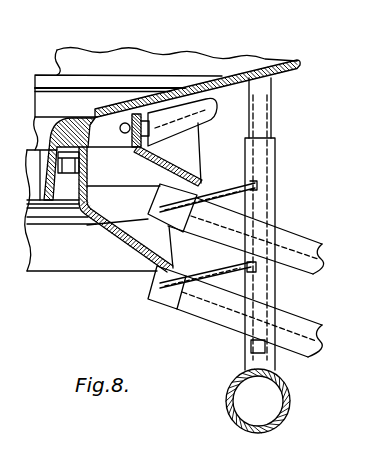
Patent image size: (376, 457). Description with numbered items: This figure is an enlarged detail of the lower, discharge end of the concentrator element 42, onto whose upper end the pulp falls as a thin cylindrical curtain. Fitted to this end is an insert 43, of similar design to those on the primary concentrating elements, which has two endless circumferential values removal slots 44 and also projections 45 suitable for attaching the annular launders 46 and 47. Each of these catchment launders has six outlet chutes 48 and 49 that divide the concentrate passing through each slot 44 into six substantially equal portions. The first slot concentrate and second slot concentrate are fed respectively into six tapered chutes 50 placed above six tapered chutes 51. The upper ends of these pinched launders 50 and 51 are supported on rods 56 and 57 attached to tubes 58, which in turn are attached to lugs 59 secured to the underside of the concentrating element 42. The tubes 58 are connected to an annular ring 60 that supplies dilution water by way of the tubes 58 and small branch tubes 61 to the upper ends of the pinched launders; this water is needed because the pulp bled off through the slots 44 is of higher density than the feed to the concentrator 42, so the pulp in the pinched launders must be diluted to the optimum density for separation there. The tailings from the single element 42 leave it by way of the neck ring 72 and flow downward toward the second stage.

The concentrator element 42 is at (261, 74).
The insert 43 is at (115, 82).
The circumferential values removal slot 44 is at (66, 112).
The projection 45 is at (89, 148).
The annular launder 46 is at (198, 132).
The annular launder 47 is at (88, 207).
The outlet chute 48 is at (199, 162).
The outlet chute 49 is at (136, 247).
The tapered chute 50 is at (292, 238).
The tapered chute 51 is at (296, 330).
The rod 56 is at (259, 272).
The rod 57 is at (274, 361).
The tube 58 is at (276, 190).
The lug 59 is at (273, 83).
The annular ring 60 is at (276, 402).
The small branch tube 61 is at (228, 185).
The neck ring 72 is at (41, 272).